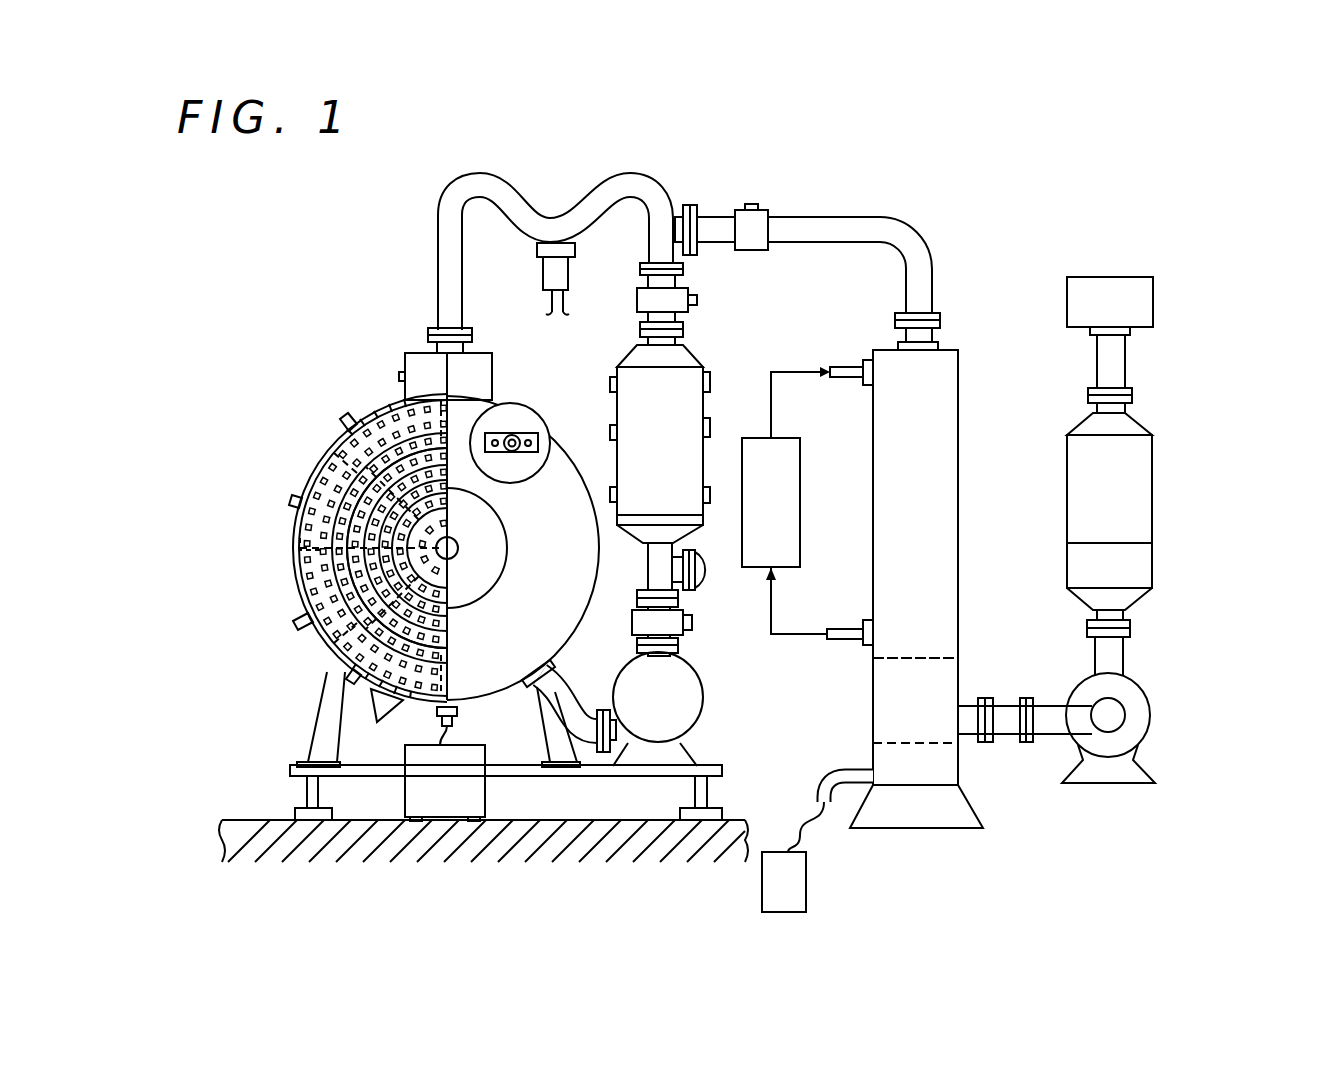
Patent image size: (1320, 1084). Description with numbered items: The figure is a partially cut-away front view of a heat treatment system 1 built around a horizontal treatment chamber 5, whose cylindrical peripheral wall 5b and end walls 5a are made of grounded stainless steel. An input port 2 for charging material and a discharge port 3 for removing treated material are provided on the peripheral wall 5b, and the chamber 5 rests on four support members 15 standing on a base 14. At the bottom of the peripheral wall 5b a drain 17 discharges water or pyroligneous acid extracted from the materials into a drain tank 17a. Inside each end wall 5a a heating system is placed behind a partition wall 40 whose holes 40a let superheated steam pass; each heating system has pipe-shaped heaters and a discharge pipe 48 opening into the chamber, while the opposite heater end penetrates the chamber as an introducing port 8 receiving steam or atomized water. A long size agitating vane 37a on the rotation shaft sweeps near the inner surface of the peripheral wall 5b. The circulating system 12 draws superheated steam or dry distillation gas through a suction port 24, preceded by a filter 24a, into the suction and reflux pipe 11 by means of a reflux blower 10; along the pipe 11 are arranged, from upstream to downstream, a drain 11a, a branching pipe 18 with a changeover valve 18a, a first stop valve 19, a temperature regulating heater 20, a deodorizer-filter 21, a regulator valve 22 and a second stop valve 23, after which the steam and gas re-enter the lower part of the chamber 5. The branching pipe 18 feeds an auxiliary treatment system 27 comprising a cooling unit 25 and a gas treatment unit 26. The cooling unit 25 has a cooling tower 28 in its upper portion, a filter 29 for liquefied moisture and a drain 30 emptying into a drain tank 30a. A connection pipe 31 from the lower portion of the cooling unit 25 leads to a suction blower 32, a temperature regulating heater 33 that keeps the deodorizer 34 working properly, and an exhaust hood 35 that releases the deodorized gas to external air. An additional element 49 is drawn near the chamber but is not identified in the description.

The heat treatment system 1 is at (360, 228).
The input port 2 is at (318, 432).
The discharge port 3 is at (305, 625).
The treatment chamber 5 is at (283, 584).
The end wall 5a is at (556, 622).
The peripheral wall 5b is at (288, 562).
The introducing port 8 is at (514, 452).
The reflux blower 10 is at (703, 713).
The suction and reflux pipe 11 is at (608, 185).
The drain 11a is at (548, 297).
The circulating system 12 is at (670, 167).
The base 14 is at (370, 776).
The support member 15 is at (327, 712).
The drain 17 is at (458, 717).
The drain tank 17a is at (438, 805).
The branching pipe 18 is at (878, 223).
The changeover valve 18a is at (765, 212).
The first stop valve 19 is at (693, 302).
The temperature regulating heater 20 is at (683, 373).
The deodorizer-filter 21 is at (703, 430).
The regulator valve 22 is at (700, 587).
The second stop valve 23 is at (693, 630).
The suction port 24 is at (467, 347).
The filter 24a is at (423, 363).
The cooling unit 25 is at (958, 320).
The gas treatment unit 26 is at (1099, 492).
The auxiliary treatment system 27 is at (1070, 201).
The cooling tower 28 is at (784, 510).
The filter 29 is at (947, 682).
The drain 30 is at (838, 772).
The drain tank 30a is at (808, 888).
The connection pipe 31 is at (1010, 712).
The suction blower 32 is at (1150, 713).
The temperature regulating heater 33 is at (1152, 573).
The deodorizer 34 is at (1155, 480).
The exhaust hood 35 is at (1150, 300).
The long size agitating vane 37a is at (296, 540).
The partition wall 40 is at (328, 668).
The holes 40a is at (382, 724).
The discharge pipe 48 is at (352, 513).
The fastener 49 is at (362, 400).